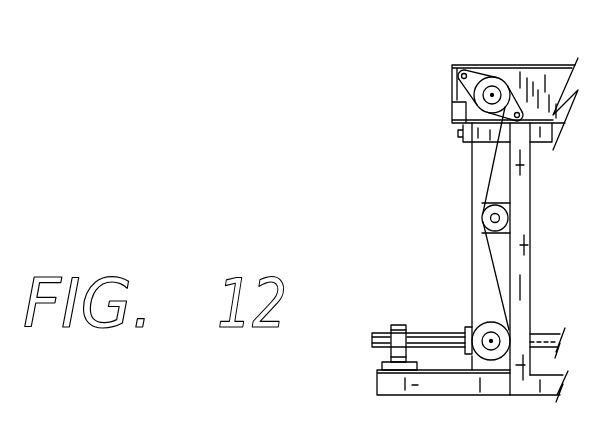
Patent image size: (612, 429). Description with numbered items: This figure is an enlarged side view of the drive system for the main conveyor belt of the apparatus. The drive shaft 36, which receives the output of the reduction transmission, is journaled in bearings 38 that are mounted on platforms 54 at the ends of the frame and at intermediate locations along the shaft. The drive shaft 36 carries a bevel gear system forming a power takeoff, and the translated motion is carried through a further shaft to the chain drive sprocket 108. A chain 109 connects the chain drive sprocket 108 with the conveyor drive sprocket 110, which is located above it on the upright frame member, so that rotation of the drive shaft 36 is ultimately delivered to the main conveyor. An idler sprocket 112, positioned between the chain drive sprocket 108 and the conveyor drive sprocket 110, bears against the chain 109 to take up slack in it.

The conveyor drive sprocket 110 is at (491, 80).
The chain 109 is at (472, 185).
The idler sprocket 112 is at (483, 218).
The chain drive sprocket 108 is at (483, 330).
The bearings 38 is at (395, 325).
The platforms 54 is at (382, 372).
The drive shaft 36 is at (550, 332).